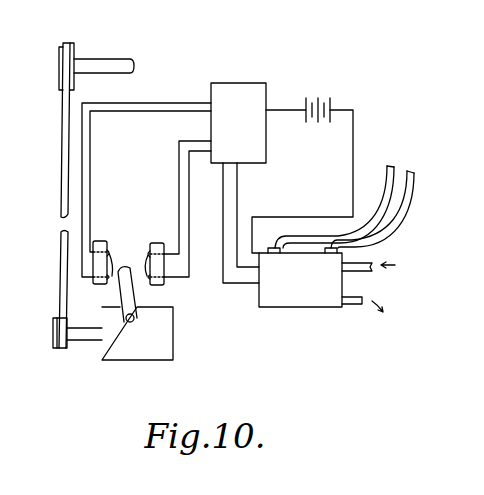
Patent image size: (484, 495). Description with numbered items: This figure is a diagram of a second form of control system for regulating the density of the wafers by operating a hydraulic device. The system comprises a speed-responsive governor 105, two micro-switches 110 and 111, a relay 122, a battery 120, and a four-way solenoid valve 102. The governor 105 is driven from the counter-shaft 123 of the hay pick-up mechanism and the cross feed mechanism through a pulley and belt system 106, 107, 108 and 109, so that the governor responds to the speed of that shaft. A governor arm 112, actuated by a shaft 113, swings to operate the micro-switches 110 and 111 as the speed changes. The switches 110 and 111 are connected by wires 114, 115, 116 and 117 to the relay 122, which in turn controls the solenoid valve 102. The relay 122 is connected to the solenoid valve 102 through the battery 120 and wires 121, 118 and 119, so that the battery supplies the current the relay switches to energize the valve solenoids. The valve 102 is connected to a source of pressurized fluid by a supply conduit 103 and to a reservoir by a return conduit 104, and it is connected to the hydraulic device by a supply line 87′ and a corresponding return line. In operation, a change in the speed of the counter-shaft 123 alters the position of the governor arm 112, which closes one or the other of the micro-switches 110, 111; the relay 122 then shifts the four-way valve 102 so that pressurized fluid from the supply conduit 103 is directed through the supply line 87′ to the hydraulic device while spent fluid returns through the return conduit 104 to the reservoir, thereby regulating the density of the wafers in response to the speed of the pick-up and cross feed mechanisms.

The supply line 87′ is at (387, 167).
The four-way solenoid valve 102 is at (337, 284).
The supply conduit 103 is at (380, 262).
The return conduit 104 is at (353, 304).
The speed-responsive governor 105 is at (148, 347).
The pulley and belt system 106 is at (85, 347).
The pulley and belt system 107 is at (53, 350).
The pulley and belt system 108 is at (60, 152).
The pulley and belt system 109 is at (62, 43).
The micro-switch 110 is at (103, 242).
The micro-switch 111 is at (157, 243).
The governor arm 112 is at (133, 297).
The shaft 113 is at (137, 322).
The wire 114 is at (90, 150).
The wire 115 is at (162, 103).
The wire 116 is at (189, 209).
The wire 117 is at (179, 185).
The wire 118 is at (223, 220).
The wire 119 is at (240, 214).
The battery 120 is at (316, 98).
The wire 121 is at (353, 125).
The relay 122 is at (243, 83).
The counter-shaft 123 is at (95, 60).